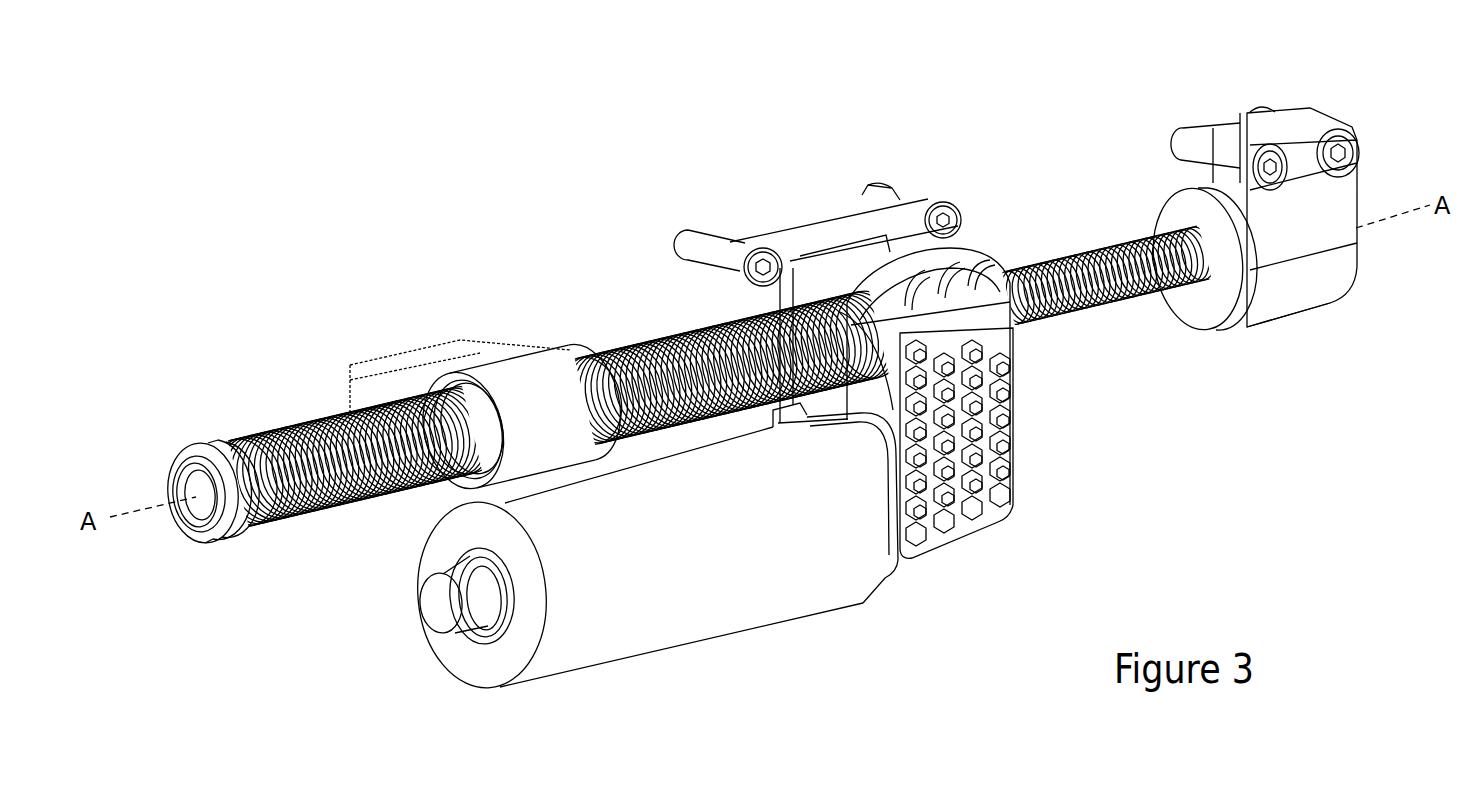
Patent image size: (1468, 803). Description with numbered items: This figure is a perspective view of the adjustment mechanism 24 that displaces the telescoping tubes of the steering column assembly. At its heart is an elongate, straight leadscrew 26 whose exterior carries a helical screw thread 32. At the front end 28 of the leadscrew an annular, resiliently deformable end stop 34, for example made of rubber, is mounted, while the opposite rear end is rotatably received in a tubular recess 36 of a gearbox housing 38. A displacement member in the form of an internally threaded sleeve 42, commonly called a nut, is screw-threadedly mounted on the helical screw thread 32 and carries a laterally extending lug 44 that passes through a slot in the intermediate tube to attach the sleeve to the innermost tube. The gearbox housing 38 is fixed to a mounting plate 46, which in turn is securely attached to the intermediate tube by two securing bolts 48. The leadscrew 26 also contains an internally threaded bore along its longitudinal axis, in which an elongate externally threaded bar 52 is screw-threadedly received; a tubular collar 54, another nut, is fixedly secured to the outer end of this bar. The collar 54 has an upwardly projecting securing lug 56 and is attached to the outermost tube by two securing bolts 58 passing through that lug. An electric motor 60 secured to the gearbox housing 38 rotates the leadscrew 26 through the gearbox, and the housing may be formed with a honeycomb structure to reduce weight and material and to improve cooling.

The mechanism 24 is at (668, 198).
The leadscrew 26 is at (646, 330).
The front end 28 is at (193, 489).
The helical screw thread 32 is at (313, 430).
The end stop 34 is at (238, 532).
The tubular recess 36 is at (848, 302).
The gearbox housing 38 is at (1030, 402).
The internally threaded sleeve 42 is at (497, 373).
The lug 44 is at (435, 357).
The mounting plate 46 is at (793, 225).
The securing bolts 48 is at (712, 240).
The externally threaded bar 52 is at (1040, 280).
The tubular collar 54 is at (1293, 273).
The securing lug 56 is at (1333, 193).
The securing bolts 58 is at (1200, 137).
The electric motor 60 is at (713, 594).